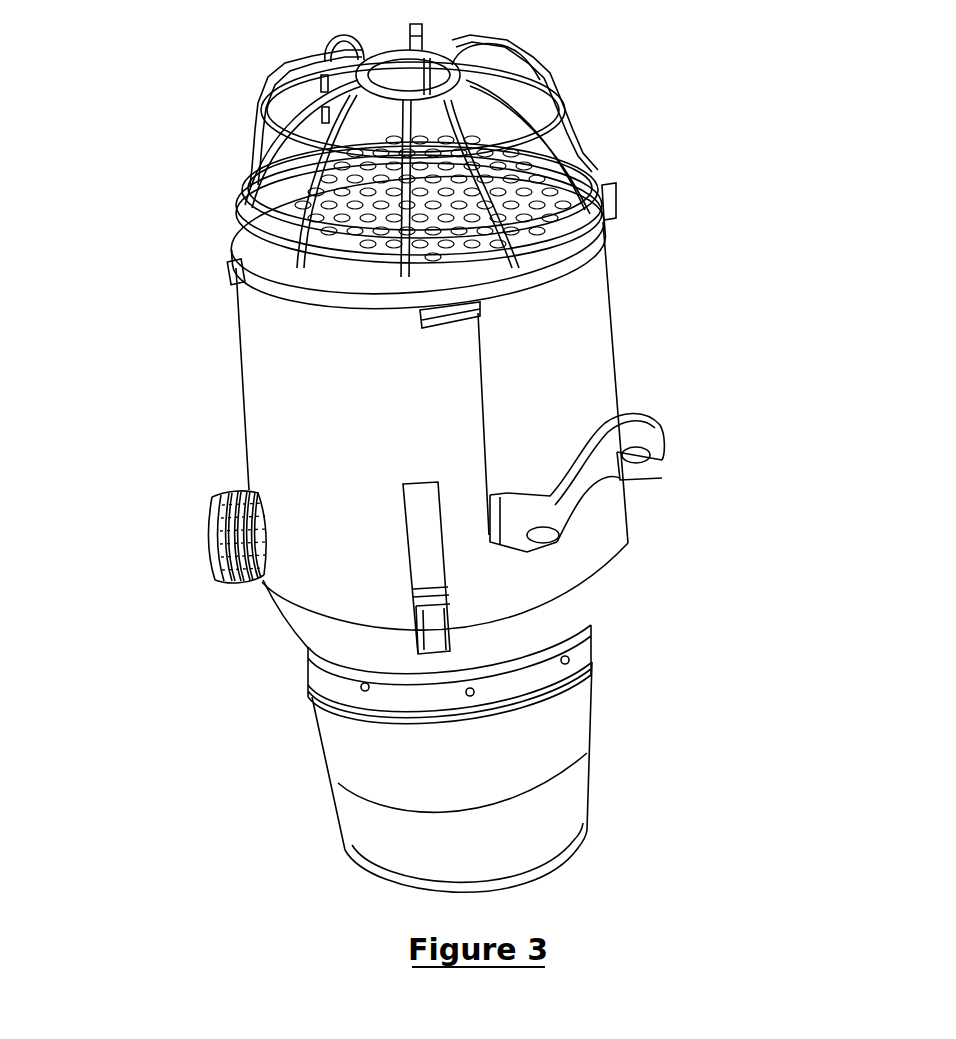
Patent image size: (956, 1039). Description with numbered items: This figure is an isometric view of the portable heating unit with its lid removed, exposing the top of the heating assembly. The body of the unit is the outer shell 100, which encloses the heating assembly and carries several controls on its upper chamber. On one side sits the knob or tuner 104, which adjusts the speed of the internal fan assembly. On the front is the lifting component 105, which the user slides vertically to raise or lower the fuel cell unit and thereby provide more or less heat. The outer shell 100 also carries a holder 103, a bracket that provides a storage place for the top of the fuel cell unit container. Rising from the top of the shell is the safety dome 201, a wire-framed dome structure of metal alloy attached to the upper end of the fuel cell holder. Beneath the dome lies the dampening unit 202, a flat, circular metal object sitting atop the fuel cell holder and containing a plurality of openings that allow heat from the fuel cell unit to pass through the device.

The outer shell 100 is at (608, 297).
The holder 103 is at (643, 434).
The knob or tuner 104 is at (208, 531).
The lifting component 105 is at (431, 632).
The safety dome 201 is at (262, 133).
The dampening unit 202 is at (322, 244).